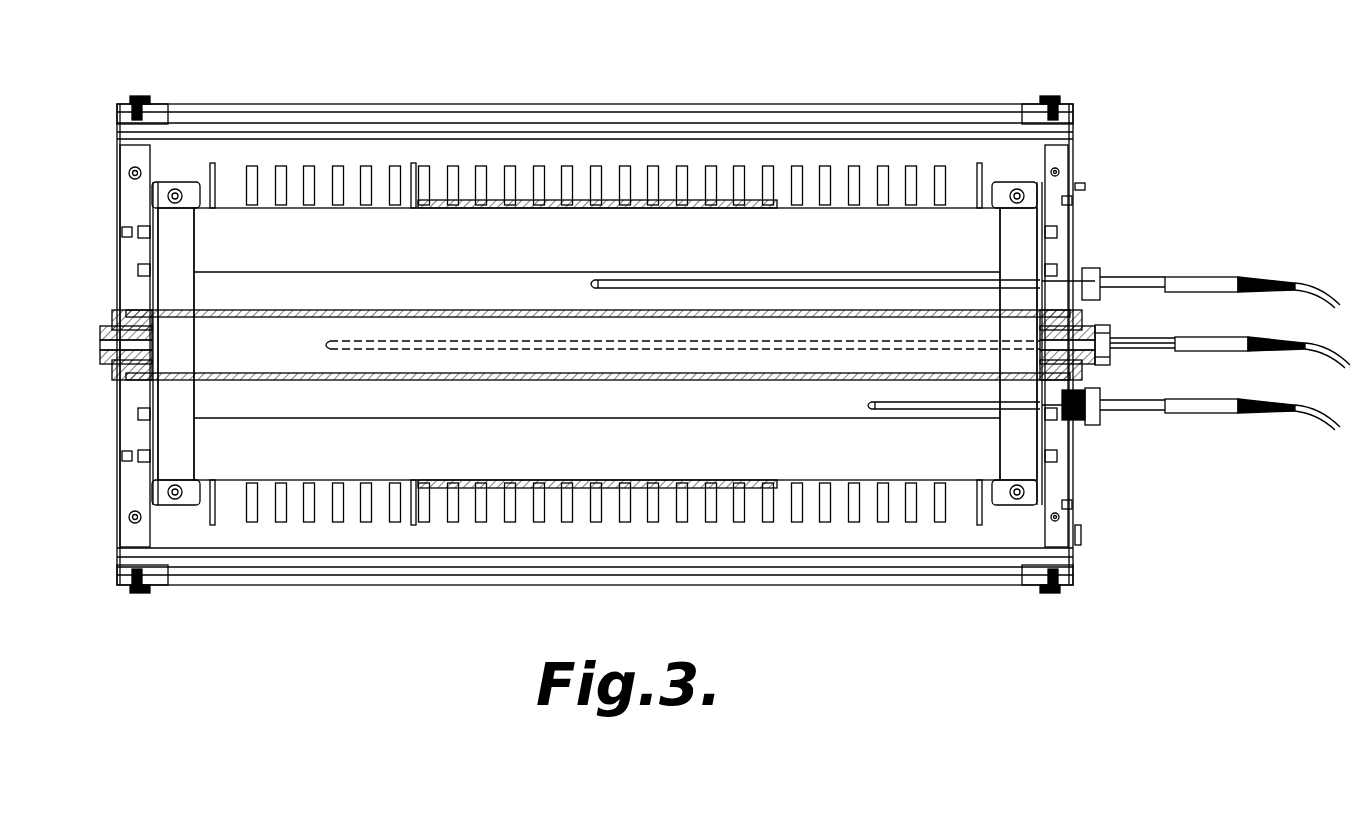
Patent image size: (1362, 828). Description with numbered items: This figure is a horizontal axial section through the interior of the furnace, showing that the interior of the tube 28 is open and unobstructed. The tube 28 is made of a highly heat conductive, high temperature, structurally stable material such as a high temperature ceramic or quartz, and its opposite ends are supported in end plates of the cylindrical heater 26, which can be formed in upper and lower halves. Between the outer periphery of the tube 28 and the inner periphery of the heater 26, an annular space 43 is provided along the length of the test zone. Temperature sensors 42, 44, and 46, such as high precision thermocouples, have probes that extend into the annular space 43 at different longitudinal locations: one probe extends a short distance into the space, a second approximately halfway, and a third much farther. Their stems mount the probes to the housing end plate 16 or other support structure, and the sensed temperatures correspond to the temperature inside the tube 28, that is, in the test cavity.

The rear panel 16 is at (1080, 462).
The heater 26 is at (817, 222).
The tube 28 is at (215, 380).
The temperature sensor 42 is at (908, 405).
The annular space 43 is at (392, 285).
The temperature sensor 44 is at (908, 275).
The temperature sensor 46 is at (345, 332).